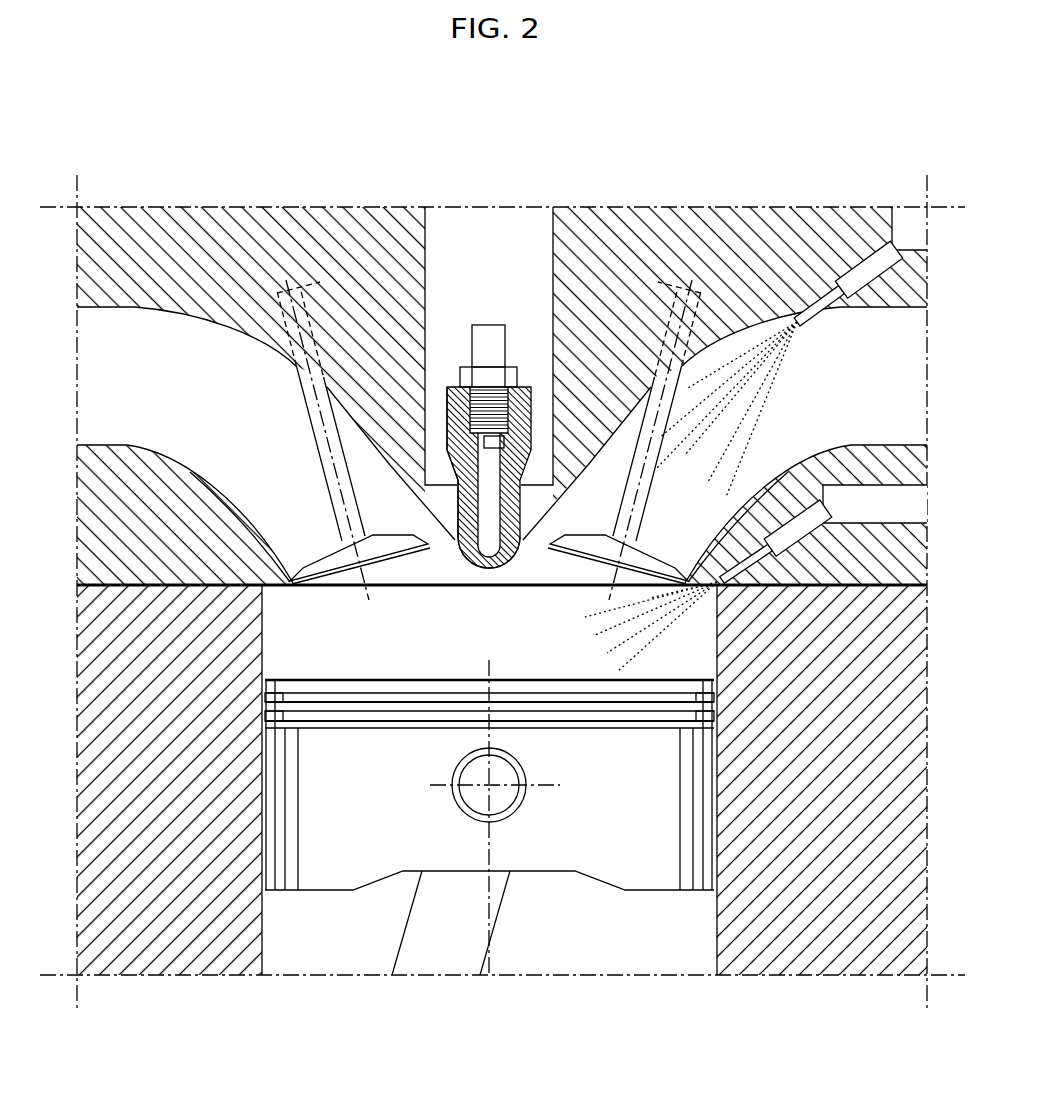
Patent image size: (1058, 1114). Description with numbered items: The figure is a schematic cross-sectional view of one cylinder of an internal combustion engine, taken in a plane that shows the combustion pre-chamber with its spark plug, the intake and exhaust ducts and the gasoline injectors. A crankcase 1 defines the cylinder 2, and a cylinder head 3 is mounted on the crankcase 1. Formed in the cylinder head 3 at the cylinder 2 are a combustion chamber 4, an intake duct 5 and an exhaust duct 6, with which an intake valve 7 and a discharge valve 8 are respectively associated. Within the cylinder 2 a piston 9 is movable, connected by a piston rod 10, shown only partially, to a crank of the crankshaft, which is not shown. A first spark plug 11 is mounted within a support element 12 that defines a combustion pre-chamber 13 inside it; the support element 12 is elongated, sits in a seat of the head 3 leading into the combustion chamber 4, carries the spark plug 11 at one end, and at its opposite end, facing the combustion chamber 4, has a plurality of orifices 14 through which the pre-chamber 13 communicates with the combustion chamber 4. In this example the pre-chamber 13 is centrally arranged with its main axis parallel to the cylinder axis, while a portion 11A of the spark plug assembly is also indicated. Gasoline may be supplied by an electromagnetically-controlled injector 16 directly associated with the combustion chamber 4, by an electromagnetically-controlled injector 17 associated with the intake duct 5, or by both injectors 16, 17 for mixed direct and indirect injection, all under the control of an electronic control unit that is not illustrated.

The crankcase 1 is at (160, 950).
The cylinder 2 is at (716, 948).
The cylinder head 3 is at (650, 232).
The combustion chamber 4 is at (281, 589).
The intake duct 5 is at (842, 446).
The exhaust duct 6 is at (126, 446).
The intake valve 7 is at (634, 454).
The discharge valve 8 is at (306, 414).
The piston 9 is at (590, 877).
The piston rod 10 is at (420, 941).
The first spark plug 11 is at (497, 321).
The spark plug housing 11A is at (451, 452).
The support element 12 is at (534, 402).
The combustion pre-chamber 13 is at (521, 521).
The orifices 14 is at (518, 563).
The injector 16 is at (836, 514).
The injector 17 is at (857, 250).